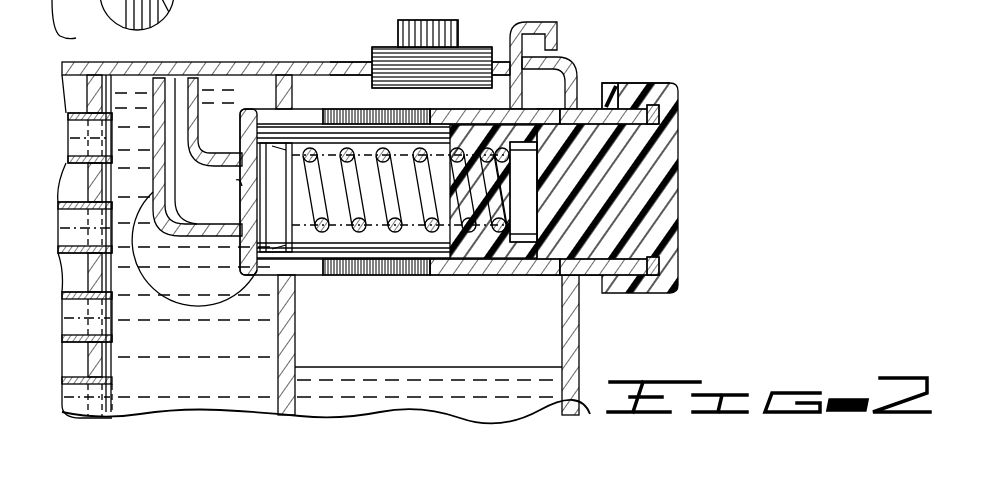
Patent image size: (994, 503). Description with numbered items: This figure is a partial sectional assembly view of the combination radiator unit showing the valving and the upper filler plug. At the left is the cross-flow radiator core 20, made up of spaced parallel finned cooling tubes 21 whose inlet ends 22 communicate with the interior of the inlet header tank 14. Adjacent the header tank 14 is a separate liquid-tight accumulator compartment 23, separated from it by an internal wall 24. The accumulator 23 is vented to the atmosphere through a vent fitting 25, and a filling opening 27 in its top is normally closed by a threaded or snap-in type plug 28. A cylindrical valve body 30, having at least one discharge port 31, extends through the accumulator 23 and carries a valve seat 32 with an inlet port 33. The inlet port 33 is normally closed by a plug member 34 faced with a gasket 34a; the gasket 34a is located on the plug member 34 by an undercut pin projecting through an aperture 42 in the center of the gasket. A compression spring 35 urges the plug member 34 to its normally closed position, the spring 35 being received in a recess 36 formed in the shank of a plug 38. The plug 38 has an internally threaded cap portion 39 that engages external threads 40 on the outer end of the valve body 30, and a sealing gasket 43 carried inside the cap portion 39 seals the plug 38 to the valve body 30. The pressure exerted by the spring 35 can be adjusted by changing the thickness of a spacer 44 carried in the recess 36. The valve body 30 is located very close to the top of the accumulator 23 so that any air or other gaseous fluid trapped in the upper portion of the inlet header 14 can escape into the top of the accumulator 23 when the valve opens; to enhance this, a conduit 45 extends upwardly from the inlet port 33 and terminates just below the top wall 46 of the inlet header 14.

The inlet header tank 14 is at (184, 390).
The cross-flow radiator core 20 is at (92, 418).
The finned cooling tubes 21 is at (64, 236).
The inlet ends 22 is at (113, 230).
The accumulator compartment 23 is at (420, 341).
The internal wall 24 is at (296, 346).
The vent fitting 25 is at (530, 22).
The filling opening 27 is at (372, 60).
The plug 28 is at (460, 22).
The cylindrical valve body 30 is at (519, 278).
The discharge port 31 is at (382, 277).
The valve seat 32 is at (241, 258).
The inlet port 33 is at (236, 213).
The plug member 34 is at (294, 236).
The gasket 34a is at (238, 182).
The compression spring 35 is at (394, 234).
The recess 36 is at (467, 277).
The plug 38 is at (678, 188).
The cap portion 39 is at (640, 83).
The external threads 40 is at (632, 82).
The aperture 42 is at (114, 12).
The sealing gasket 43 is at (660, 114).
The spacer 44 is at (526, 184).
The conduit 45 is at (198, 108).
The top wall 46 is at (178, 62).